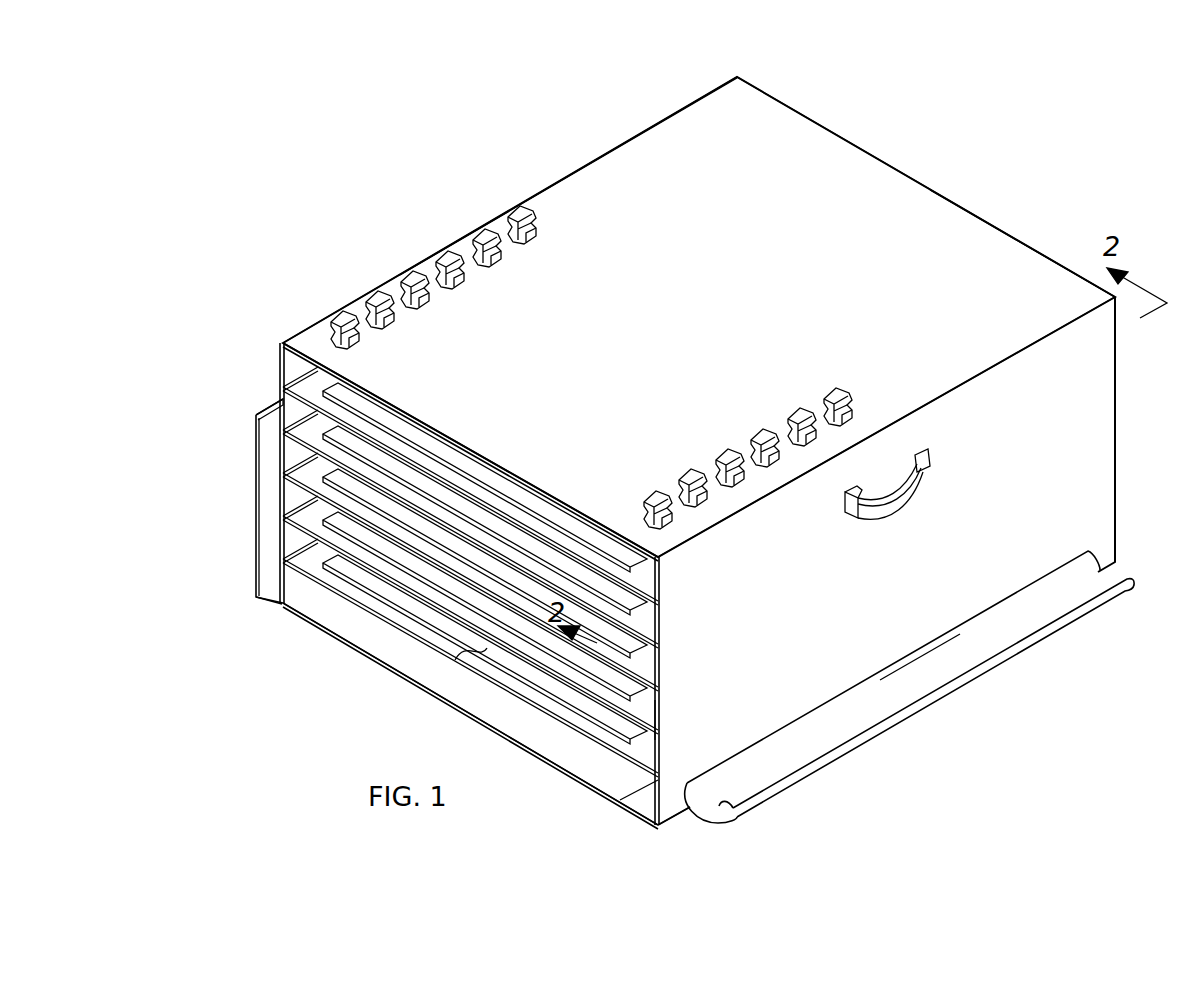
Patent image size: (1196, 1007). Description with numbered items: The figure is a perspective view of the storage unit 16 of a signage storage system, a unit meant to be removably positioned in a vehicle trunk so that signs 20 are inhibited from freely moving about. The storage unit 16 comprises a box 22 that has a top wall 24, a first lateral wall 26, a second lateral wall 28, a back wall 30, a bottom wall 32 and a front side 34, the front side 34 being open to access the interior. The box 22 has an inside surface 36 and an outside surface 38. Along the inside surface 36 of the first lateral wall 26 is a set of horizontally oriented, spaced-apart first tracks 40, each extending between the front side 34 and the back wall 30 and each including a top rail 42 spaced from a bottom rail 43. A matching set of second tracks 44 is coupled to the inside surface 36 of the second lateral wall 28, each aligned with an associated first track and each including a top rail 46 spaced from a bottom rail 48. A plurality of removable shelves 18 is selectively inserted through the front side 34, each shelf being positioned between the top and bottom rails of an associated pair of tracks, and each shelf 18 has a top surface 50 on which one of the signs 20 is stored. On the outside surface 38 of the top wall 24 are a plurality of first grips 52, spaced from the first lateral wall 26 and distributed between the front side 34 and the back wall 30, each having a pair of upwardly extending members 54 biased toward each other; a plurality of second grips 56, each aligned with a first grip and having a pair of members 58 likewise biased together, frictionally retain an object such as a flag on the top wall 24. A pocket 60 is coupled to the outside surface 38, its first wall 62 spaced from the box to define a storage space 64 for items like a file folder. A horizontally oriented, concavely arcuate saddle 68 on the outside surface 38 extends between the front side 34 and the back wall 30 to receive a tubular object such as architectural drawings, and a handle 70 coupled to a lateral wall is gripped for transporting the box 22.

The storage unit 16 is at (242, 122).
The removable shelves 18 is at (340, 554).
The signs 20 is at (328, 428).
The box 22 is at (738, 78).
The top wall 24 is at (634, 150).
The first lateral wall 26 is at (352, 318).
The second lateral wall 28 is at (1088, 425).
The back wall 30 is at (1040, 250).
The bottom wall 32 is at (680, 812).
The front side 34 is at (500, 765).
The inside surface 36 is at (296, 545).
The outside surface 38 is at (855, 656).
The first tracks 40 is at (283, 494).
The top rail 42 is at (283, 557).
The bottom rail 43 is at (262, 603).
The second tracks 44 is at (641, 797).
The top rail 46 is at (650, 665).
The bottom rail 48 is at (648, 713).
The top surface 50 is at (477, 662).
The first grips 52 is at (457, 243).
The members 54 is at (410, 275).
The second grips 56 is at (846, 372).
The members 58 is at (856, 405).
The pocket 60 is at (258, 413).
The first wall 62 is at (262, 405).
The storage space 64 is at (265, 390).
The saddle 68 is at (1098, 606).
The handles 70 is at (915, 487).